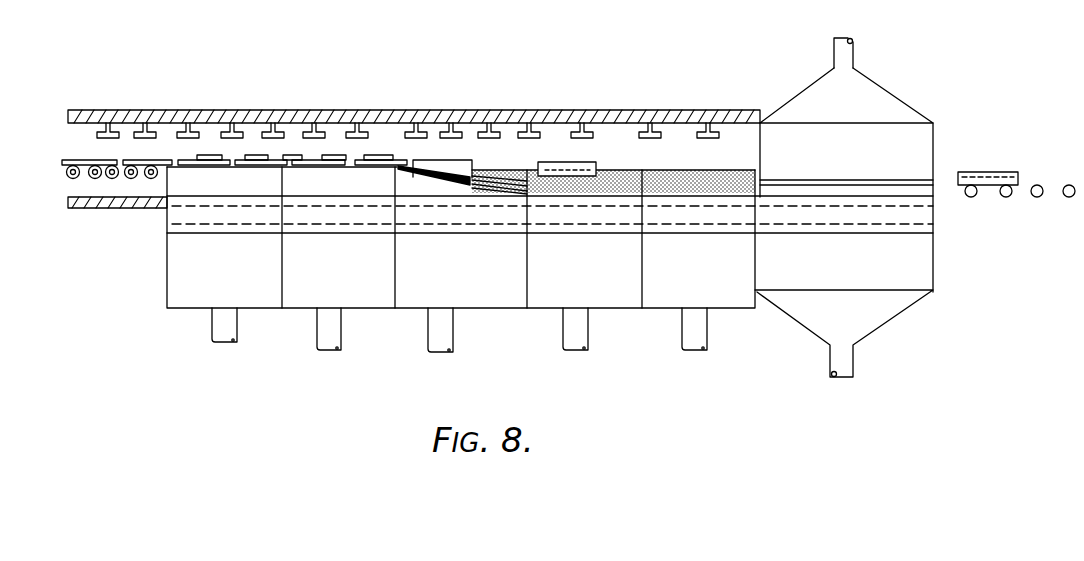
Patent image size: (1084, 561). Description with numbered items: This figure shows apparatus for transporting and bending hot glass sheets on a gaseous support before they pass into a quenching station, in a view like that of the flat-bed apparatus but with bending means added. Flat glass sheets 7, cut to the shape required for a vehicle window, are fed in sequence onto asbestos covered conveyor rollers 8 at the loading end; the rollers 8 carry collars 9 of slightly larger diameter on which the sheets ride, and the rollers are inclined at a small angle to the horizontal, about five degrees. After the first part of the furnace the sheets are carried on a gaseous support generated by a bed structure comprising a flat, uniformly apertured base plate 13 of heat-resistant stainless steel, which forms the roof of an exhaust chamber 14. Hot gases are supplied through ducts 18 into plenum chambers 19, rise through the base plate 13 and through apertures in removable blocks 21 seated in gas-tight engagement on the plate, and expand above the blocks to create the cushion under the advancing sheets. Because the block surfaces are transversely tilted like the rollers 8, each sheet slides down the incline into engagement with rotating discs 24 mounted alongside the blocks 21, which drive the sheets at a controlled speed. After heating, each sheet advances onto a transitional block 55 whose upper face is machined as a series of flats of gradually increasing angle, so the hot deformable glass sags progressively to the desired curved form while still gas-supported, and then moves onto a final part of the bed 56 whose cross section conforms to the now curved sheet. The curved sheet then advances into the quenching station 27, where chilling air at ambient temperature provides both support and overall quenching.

The glass sheets 7 is at (80, 158).
The conveyor rollers 8 is at (72, 180).
The collars 9 is at (67, 171).
The base plate 13 is at (196, 200).
The exhaust chamber 14 is at (253, 214).
The ducts 18 is at (237, 341).
The plenum chambers 19 is at (190, 296).
The removable blocks 21 is at (180, 183).
The rotating discs 24 is at (210, 156).
The quenching station 27 is at (905, 95).
The transitional block 55 is at (408, 185).
The final part of the bed 56 is at (550, 190).